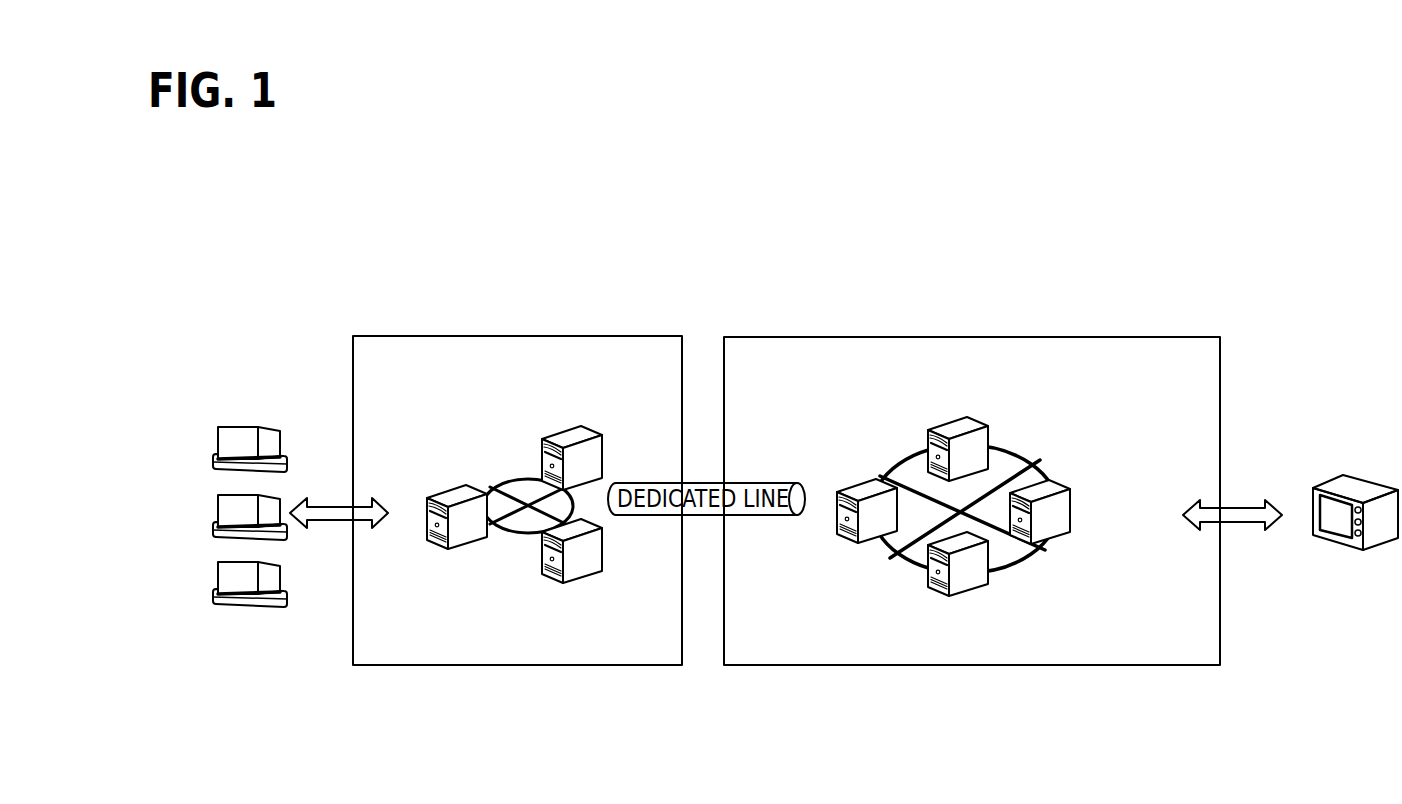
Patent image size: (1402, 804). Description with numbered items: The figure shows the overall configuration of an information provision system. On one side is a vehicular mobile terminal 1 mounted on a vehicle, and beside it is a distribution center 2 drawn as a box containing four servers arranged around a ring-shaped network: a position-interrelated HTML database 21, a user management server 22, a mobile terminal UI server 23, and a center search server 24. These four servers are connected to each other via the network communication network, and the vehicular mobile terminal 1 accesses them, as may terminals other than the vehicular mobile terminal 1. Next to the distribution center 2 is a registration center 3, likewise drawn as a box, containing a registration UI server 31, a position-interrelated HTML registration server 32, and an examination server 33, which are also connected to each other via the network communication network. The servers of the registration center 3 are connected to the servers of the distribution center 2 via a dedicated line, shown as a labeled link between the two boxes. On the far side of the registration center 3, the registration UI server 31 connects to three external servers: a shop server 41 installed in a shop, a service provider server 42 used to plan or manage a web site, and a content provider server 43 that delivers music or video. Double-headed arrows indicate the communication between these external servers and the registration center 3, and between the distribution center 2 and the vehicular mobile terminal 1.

The vehicular mobile terminal 1 is at (1371, 482).
The distribution center 2 is at (835, 337).
The registration center 3 is at (400, 336).
The position-interrelated HTML database 21 is at (848, 487).
The user management server 22 is at (925, 560).
The mobile terminal UI server 23 is at (1073, 507).
The center search server 24 is at (952, 423).
The registration UI server 31 is at (438, 490).
The position-interrelated HTML registration server 32 is at (565, 430).
The examination server 33 is at (577, 578).
The shop server 41 is at (218, 441).
The service provider server 42 is at (218, 510).
The content provider server 43 is at (218, 575).